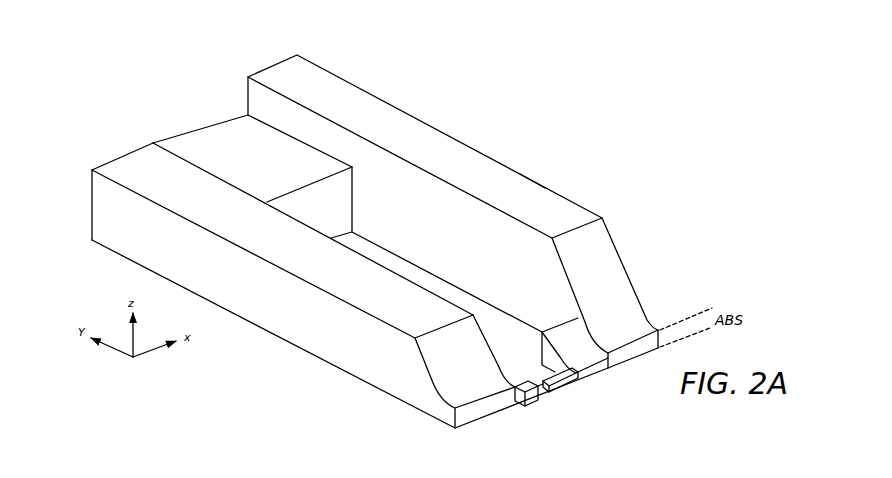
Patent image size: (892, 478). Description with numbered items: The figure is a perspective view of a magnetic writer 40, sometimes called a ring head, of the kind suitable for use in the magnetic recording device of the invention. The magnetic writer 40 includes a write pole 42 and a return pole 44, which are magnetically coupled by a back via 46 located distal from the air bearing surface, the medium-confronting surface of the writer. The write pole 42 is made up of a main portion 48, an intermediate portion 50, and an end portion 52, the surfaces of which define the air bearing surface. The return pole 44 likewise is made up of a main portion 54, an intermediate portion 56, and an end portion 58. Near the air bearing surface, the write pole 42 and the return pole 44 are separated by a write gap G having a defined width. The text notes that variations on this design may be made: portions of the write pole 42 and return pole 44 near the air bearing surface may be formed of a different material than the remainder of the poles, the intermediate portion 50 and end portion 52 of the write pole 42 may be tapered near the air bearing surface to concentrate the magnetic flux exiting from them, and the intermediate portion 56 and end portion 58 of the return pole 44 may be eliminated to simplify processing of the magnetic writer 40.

The magnetic writer 40 is at (181, 81).
The write pole 42 is at (101, 157).
The return pole 44 is at (260, 62).
The back via 46 is at (259, 164).
The main portion 48 is at (250, 303).
The intermediate portion 50 is at (522, 403).
The end portion 52 is at (537, 393).
The main portion 54 is at (545, 188).
The intermediate portion 56 is at (612, 367).
The end portion 58 is at (562, 383).
The write gap G is at (532, 380).